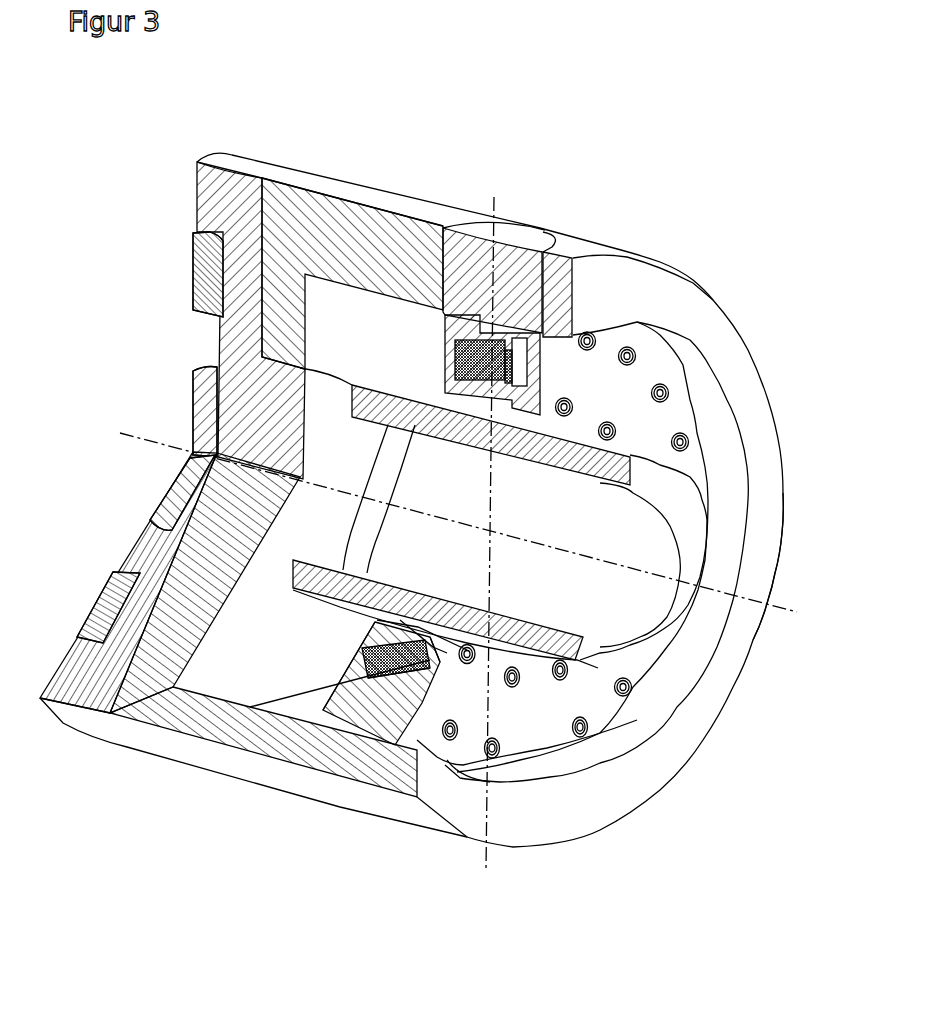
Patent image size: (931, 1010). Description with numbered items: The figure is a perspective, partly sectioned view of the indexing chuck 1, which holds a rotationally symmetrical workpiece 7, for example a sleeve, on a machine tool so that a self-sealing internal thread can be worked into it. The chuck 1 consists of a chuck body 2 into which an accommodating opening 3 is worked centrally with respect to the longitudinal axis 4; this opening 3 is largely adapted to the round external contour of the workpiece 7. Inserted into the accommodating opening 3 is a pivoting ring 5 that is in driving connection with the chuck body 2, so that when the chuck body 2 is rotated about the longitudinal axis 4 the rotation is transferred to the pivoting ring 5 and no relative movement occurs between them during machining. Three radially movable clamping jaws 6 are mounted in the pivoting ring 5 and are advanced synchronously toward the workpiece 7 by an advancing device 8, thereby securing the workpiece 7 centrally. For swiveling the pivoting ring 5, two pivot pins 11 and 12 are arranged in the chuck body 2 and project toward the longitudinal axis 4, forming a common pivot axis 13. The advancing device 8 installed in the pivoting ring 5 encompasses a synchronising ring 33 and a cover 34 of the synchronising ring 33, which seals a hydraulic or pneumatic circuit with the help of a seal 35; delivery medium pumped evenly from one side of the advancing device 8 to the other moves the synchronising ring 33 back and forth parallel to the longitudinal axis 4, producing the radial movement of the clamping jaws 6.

The indexing chuck 1 is at (683, 212).
The chuck body 2 is at (220, 725).
The accommodating opening 3 is at (723, 377).
The longitudinal axis 4 is at (771, 620).
The pivoting ring 5 is at (533, 718).
The clamping jaws 6 is at (392, 750).
The workpiece 7 is at (640, 653).
The advancing device 8 is at (513, 363).
The pivot pin 11 is at (482, 258).
The pivot pin 12 is at (535, 722).
The pivot axis 13 is at (495, 197).
The synchronising ring 33 is at (400, 686).
The cover 34 is at (425, 690).
The seal 35 is at (418, 672).